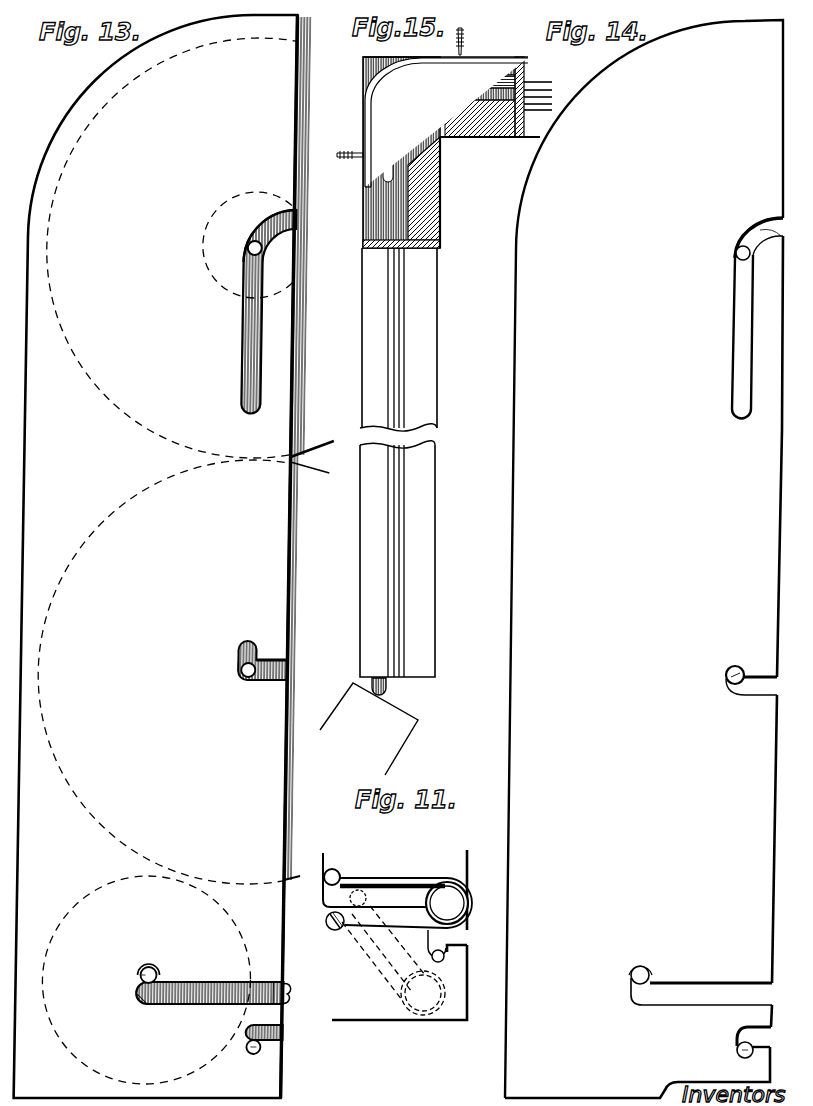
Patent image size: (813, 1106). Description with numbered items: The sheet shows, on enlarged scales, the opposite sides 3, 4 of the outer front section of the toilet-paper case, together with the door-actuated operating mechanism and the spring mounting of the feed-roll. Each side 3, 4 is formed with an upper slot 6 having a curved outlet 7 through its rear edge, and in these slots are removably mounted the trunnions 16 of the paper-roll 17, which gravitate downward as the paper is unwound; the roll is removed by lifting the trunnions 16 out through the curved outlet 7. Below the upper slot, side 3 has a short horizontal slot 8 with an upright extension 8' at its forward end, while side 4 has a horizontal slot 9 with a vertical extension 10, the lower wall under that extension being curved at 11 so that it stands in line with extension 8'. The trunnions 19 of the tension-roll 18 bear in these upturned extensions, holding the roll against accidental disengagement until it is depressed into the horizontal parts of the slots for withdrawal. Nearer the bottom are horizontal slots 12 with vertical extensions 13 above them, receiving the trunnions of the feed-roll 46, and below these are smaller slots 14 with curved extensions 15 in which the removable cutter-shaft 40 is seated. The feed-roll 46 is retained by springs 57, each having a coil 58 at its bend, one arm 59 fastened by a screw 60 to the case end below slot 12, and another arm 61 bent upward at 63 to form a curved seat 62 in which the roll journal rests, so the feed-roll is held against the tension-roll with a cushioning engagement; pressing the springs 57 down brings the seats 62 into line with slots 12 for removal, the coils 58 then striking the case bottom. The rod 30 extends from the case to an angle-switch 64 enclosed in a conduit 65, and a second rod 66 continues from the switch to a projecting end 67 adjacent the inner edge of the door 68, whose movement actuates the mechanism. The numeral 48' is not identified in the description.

In FIG. 13, the side 3 is at (243, 556).
In FIG. 14, the side 4 is at (644, 559).
In FIG. 13, the upper slot 6 is at (245, 328).
In FIG. 14, the upper slot 6 is at (732, 348).
In FIG. 13, the curved outlet 7 is at (301, 234).
In FIG. 14, the curved outlet 7 is at (786, 238).
In FIG. 14, the horizontal slot 8 is at (751, 701).
In FIG. 14, the upright extension 8' is at (728, 659).
In FIG. 13, the horizontal slot 9 is at (279, 684).
In FIG. 13, the vertical extension 10 is at (253, 642).
In FIG. 13, the curved wall 11 is at (247, 678).
In FIG. 13, the horizontal slot 12 is at (216, 981).
In FIG. 14, the horizontal slot 12 is at (688, 990).
In FIG. 13, the vertical extension 13 is at (166, 967).
In FIG. 14, the vertical extension 13 is at (647, 967).
In FIG. 13, the horizontal slot 14 is at (288, 1042).
In FIG. 14, the horizontal slot 14 is at (762, 1046).
In FIG. 13, the curved extension 15 is at (262, 1053).
In FIG. 14, the curved extension 15 is at (742, 1058).
In FIG. 13, the trunnion 16 is at (250, 246).
In FIG. 14, the trunnion 16 is at (736, 255).
In FIG. 13, the paper-roll 17 is at (301, 216).
In FIG. 13, the tension-roll 18 is at (311, 556).
In FIG. 13, the trunnion 19 is at (248, 670).
In FIG. 14, the trunnion 19 is at (727, 677).
In FIG. 15, the rod 30 is at (488, 80).
In FIG. 13, the cutter-shaft 40 is at (272, 1049).
In FIG. 14, the cutter-shaft 40 is at (738, 1046).
In FIG. 13, the feed-roll 46 is at (127, 1003).
In FIG. 13, the rod 48' is at (123, 964).
In FIG. 11, the spring 57 is at (398, 945).
In FIG. 13, the coil 58 is at (300, 996).
In FIG. 11, the coil 58 is at (471, 903).
In FIG. 11, the arm 59 is at (375, 957).
In FIG. 11, the screw 60 is at (326, 930).
In FIG. 11, the arm 61 is at (398, 876).
In FIG. 11, the curved seat 62 is at (345, 880).
In FIG. 11, the upwardly bent portion 63 is at (336, 870).
In FIG. 15, the angle-switch 64 is at (446, 122).
In FIG. 15, the conduit 65 is at (436, 300).
In FIG. 15, the rod 66 is at (388, 215).
In FIG. 15, the projecting end 67 is at (388, 690).
In FIG. 15, the door 68 is at (406, 713).